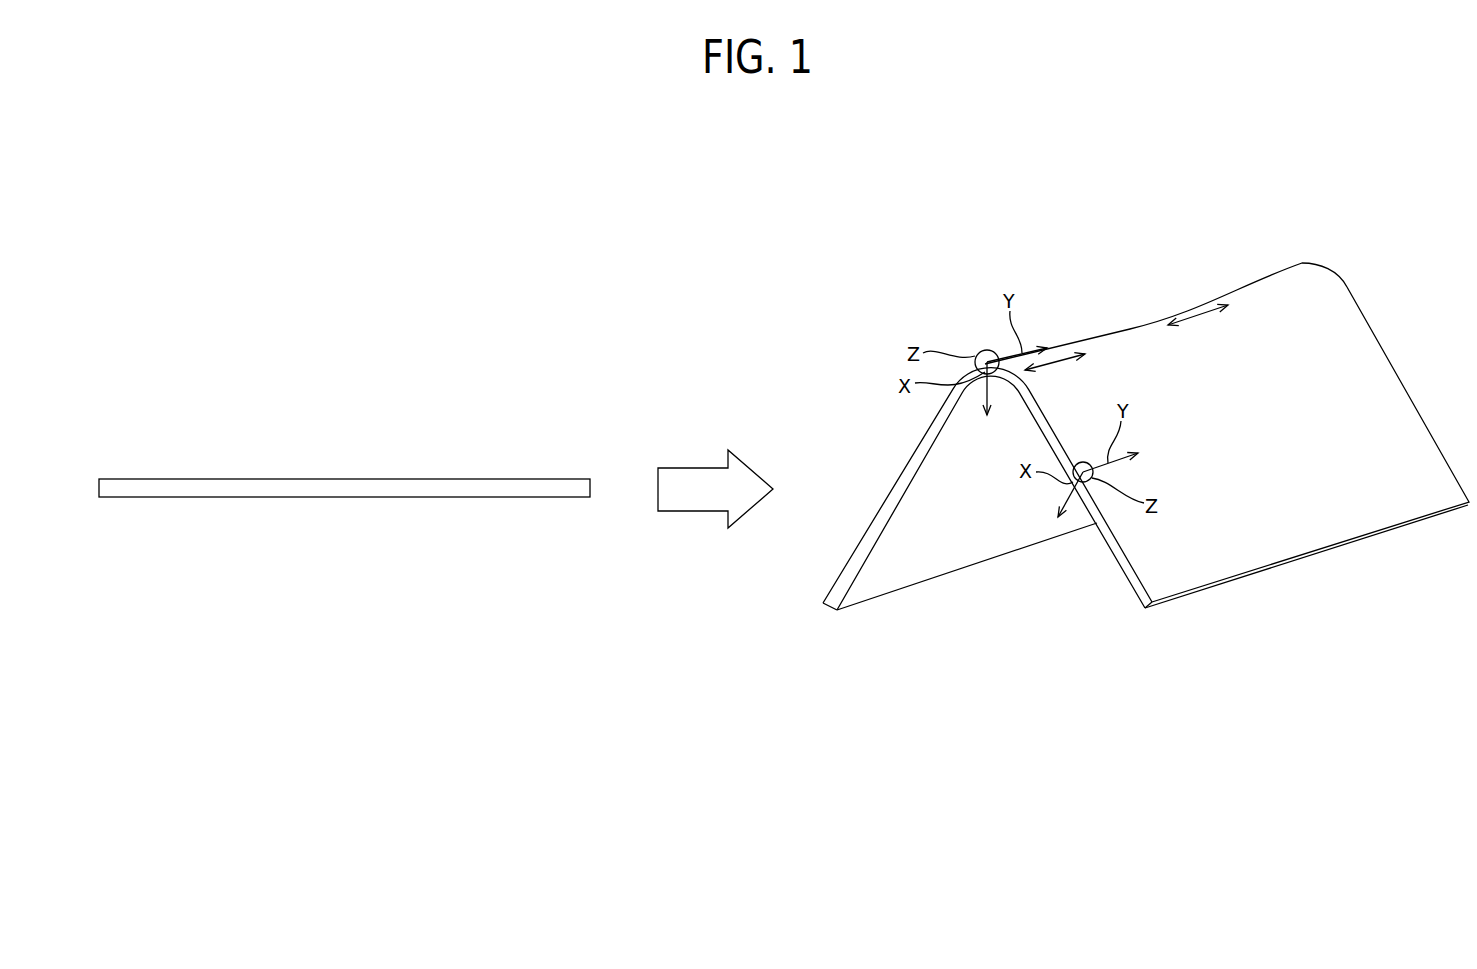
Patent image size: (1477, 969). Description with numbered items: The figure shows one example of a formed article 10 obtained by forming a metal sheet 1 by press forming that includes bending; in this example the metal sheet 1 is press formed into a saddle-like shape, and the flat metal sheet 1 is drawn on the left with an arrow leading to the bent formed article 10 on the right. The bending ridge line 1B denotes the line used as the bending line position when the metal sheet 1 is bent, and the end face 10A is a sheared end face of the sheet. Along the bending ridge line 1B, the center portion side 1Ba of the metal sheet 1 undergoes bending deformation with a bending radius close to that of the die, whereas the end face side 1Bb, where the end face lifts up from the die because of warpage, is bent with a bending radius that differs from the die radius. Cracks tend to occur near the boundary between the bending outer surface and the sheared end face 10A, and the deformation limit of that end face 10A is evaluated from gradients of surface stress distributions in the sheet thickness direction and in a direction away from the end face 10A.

The metal sheet 1 is at (396, 479).
The formed article 10 is at (1377, 283).
The end face 10A is at (1107, 545).
The bending ridge line 1B is at (1245, 288).
The center portion side 1Ba is at (1200, 316).
The end face side 1Bb is at (1054, 364).